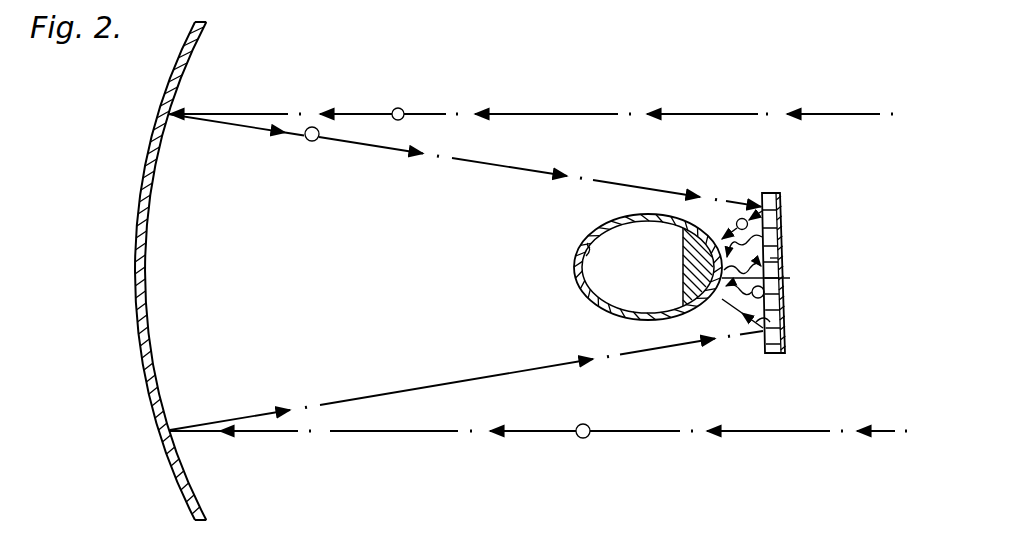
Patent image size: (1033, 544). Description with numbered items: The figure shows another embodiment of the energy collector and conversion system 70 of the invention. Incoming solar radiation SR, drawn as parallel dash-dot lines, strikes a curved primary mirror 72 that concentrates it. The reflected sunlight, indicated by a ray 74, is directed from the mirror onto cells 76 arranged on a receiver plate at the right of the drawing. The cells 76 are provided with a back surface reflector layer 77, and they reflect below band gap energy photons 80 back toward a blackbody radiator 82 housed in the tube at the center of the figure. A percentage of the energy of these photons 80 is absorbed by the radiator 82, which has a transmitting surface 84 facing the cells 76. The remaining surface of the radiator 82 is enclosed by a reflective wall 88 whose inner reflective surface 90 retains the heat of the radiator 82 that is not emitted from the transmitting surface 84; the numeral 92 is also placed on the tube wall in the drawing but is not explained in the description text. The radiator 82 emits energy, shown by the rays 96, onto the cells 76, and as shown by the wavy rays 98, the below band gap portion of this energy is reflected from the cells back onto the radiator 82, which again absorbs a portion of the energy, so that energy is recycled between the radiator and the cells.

The energy collector and conversion system 70 is at (780, 278).
The primary mirror 72 is at (163, 119).
The ray 74 is at (315, 142).
The cells 76 is at (767, 353).
The back surface reflector layer 77 is at (775, 193).
The below band gap energy photons 80 is at (749, 222).
The blackbody radiator 82 is at (693, 255).
The transmitting surface 84 is at (790, 278).
The reflective wall 88 is at (585, 296).
The inner reflective surface 90 is at (578, 246).
The inner surface 92 is at (587, 252).
The rays 96 is at (778, 258).
The rays 98 is at (770, 249).
The solar radiation SR is at (398, 108).